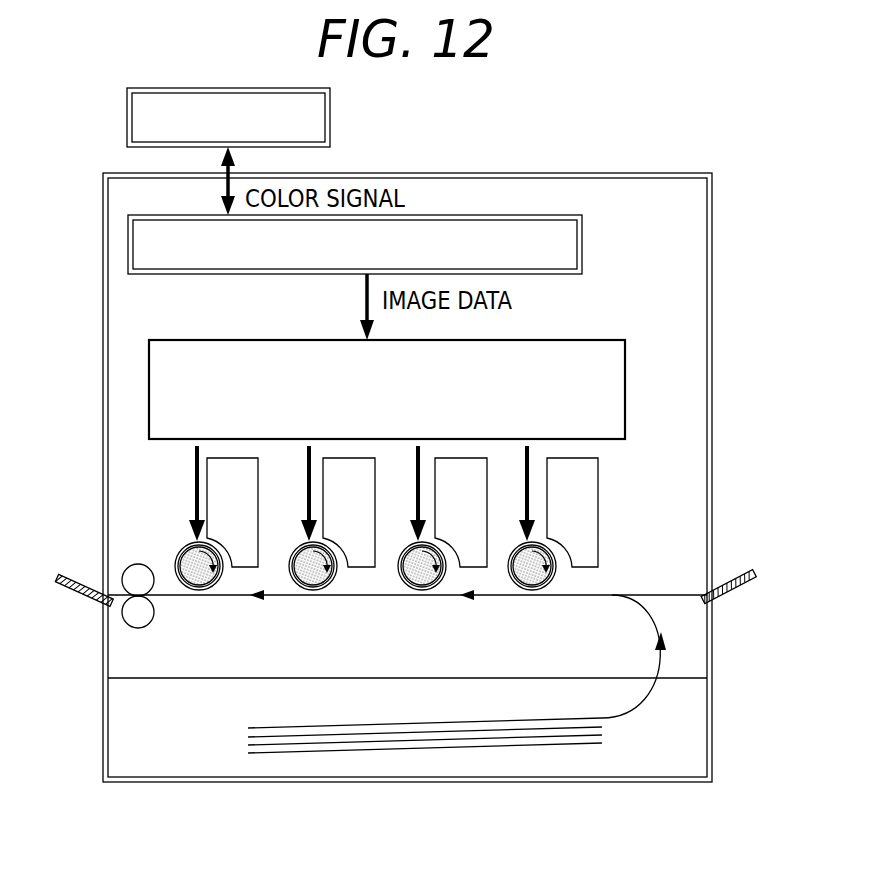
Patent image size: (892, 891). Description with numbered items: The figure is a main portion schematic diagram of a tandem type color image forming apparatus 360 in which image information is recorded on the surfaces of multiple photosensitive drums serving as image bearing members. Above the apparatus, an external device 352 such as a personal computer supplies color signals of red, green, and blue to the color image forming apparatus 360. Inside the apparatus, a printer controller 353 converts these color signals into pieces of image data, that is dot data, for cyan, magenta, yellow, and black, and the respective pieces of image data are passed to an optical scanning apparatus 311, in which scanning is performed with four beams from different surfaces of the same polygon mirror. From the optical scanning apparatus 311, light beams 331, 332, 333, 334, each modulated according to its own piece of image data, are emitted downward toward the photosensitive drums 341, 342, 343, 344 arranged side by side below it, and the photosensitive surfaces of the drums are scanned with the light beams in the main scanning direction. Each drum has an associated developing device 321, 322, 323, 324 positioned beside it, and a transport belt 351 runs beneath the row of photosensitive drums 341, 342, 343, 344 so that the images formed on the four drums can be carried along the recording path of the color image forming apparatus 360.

The optical scanning apparatus 311 is at (188, 345).
The developing device 321 is at (230, 466).
The developing device 322 is at (348, 466).
The developing device 323 is at (462, 466).
The developing device 324 is at (575, 466).
The light beam 331 is at (194, 488).
The light beam 332 is at (302, 472).
The light beam 333 is at (413, 472).
The light beam 334 is at (523, 472).
The photosensitive drum 341 is at (197, 586).
The photosensitive drum 342 is at (312, 586).
The photosensitive drum 343 is at (422, 586).
The photosensitive drum 344 is at (532, 586).
The transport belt 351 is at (650, 615).
The external device 352 is at (332, 105).
The printer controller 353 is at (583, 238).
The color image forming apparatus 360 is at (632, 172).